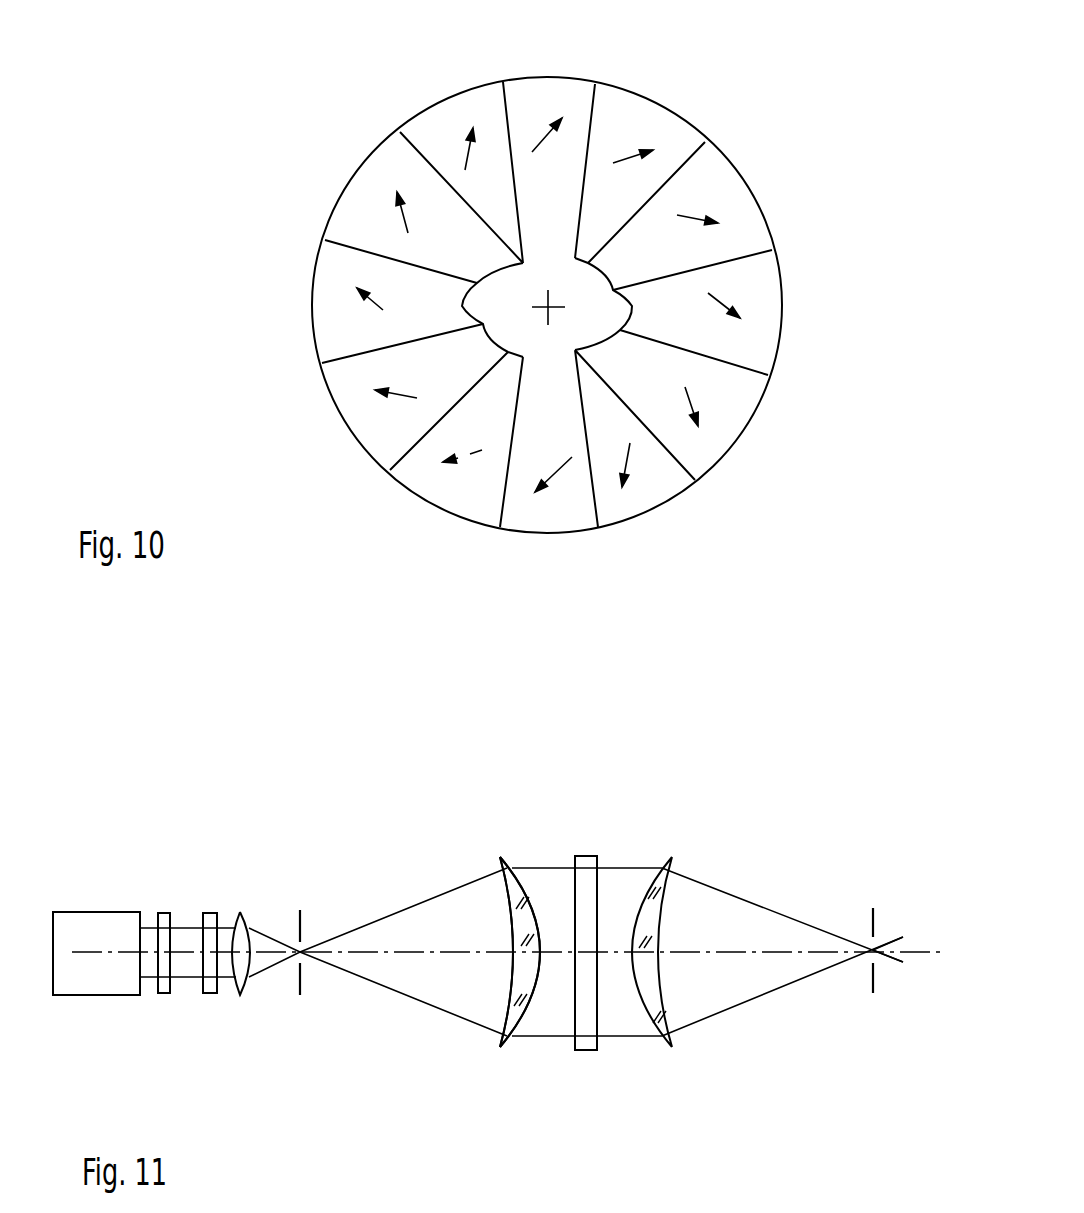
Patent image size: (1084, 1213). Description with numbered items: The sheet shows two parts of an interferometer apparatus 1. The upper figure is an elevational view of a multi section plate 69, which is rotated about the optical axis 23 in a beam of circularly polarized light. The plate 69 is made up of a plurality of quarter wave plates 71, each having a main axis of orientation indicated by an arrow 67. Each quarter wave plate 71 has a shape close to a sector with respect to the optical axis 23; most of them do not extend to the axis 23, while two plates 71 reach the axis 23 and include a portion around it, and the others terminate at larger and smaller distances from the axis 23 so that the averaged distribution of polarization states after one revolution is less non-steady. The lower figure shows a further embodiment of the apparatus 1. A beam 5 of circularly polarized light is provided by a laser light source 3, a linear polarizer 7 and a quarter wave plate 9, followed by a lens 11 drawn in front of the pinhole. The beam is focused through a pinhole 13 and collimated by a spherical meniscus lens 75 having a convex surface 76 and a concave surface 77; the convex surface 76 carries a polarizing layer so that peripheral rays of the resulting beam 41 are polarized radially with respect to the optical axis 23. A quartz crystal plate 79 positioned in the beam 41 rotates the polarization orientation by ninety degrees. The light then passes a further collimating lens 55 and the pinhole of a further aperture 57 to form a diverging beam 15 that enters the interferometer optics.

In FIG. 11, the interferometer apparatus 1 is at (330, 1012).
In FIG. 11, the laser light source 3 is at (97, 912).
In FIG. 11, the beam of circularly polarized light 5 is at (226, 978).
In FIG. 11, the linear polarizer 7 is at (163, 913).
In FIG. 11, the quarter wave plate 9 is at (208, 913).
In FIG. 11, the collector lens 11 is at (240, 912).
In FIG. 11, the pinhole 13 is at (302, 927).
In FIG. 11, the diverging beam 15 is at (890, 962).
In FIG. 10, the optical axis 23 is at (565, 307).
In FIG. 11, the optical axis 23 is at (917, 948).
In FIG. 11, the beam of linearly polarized light 41 is at (552, 1037).
In FIG. 11, the further collimating lens 55 is at (672, 856).
In FIG. 11, the further aperture 57 is at (877, 927).
In FIG. 10, the arrow 67 is at (463, 150).
In FIG. 10, the multi section plate 69 is at (347, 433).
In FIG. 10, the quarter wave plates 71 is at (461, 250).
In FIG. 11, the spherical meniscus lens 75 is at (500, 856).
In FIG. 11, the convex surface 76 is at (524, 890).
In FIG. 11, the concave surface 77 is at (500, 886).
In FIG. 11, the quartz crystal plate 79 is at (585, 856).